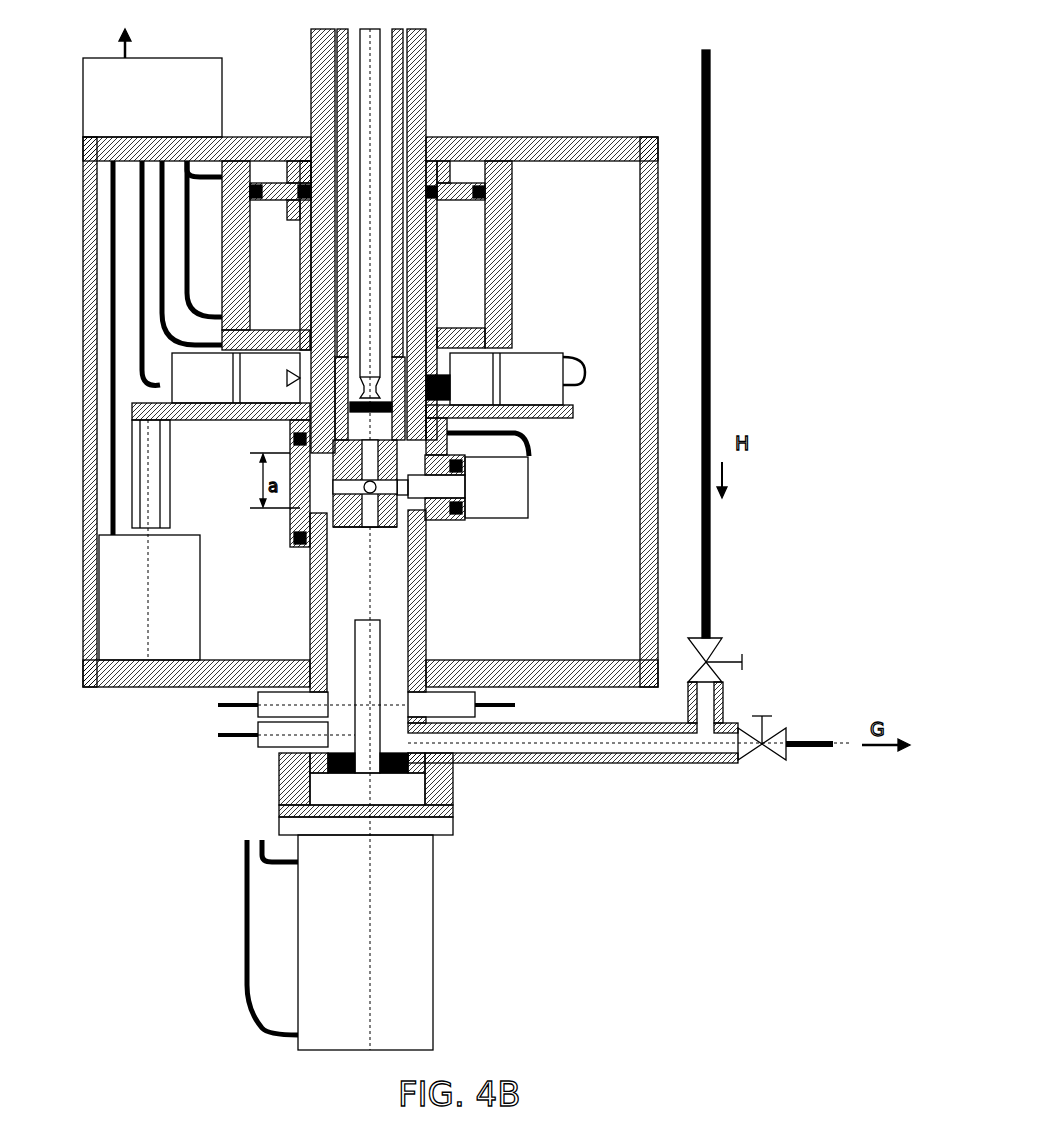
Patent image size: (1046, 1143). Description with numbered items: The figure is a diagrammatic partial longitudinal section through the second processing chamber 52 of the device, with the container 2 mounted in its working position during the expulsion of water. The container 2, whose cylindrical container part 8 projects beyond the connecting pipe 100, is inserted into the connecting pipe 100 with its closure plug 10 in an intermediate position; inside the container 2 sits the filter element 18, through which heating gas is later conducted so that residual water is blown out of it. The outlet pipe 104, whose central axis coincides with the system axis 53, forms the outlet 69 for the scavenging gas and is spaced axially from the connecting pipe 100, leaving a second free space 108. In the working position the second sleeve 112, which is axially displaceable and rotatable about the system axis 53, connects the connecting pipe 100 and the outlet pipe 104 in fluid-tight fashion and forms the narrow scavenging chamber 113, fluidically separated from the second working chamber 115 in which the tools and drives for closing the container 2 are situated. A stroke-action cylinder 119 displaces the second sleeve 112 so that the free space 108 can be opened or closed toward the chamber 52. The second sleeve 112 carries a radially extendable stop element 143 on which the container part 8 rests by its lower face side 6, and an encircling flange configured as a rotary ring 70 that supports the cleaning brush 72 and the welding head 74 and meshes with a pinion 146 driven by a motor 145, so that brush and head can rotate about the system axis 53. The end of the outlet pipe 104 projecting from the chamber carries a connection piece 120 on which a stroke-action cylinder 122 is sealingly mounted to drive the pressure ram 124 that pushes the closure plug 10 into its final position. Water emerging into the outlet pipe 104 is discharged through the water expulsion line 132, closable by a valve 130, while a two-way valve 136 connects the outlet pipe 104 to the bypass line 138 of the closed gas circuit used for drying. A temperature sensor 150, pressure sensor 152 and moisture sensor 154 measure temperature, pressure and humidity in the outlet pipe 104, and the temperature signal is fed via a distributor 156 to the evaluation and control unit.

The container 2 is at (330, 110).
The lower face side 6 is at (333, 480).
The cylindrical container part 8 is at (395, 127).
The closure plug 10 is at (428, 540).
The filter element 18 is at (387, 363).
The second processing chamber 52 is at (528, 116).
The system axis 53 is at (370, 320).
The outlet 69 is at (343, 680).
The rotary ring 70 is at (573, 412).
The cleaning brush 72 is at (465, 380).
The welding head 74 is at (253, 383).
The connecting pipe 100 is at (410, 47).
The outlet pipe 104 is at (432, 620).
The second free space 108 is at (340, 502).
The second sleeve 112 is at (290, 443).
The scavenging chamber 113 is at (358, 568).
The second working chamber 115 is at (600, 592).
The stroke-action cylinder 119 is at (490, 240).
The connection piece 120 is at (450, 795).
The stroke-action cylinder 122 is at (417, 940).
The pressure ram 124 is at (290, 765).
The valve 130 is at (782, 720).
The water expulsion line 132 is at (625, 763).
The two-way valve 136 is at (752, 660).
The bypass line 138 is at (712, 348).
The stop element 143 is at (478, 491).
The motor 145 is at (190, 624).
The pinion 146 is at (160, 490).
The temperature sensor 150 is at (365, 733).
The pressure sensor 152 is at (265, 710).
The moisture sensor 154 is at (515, 709).
The distributor 156 is at (148, 66).